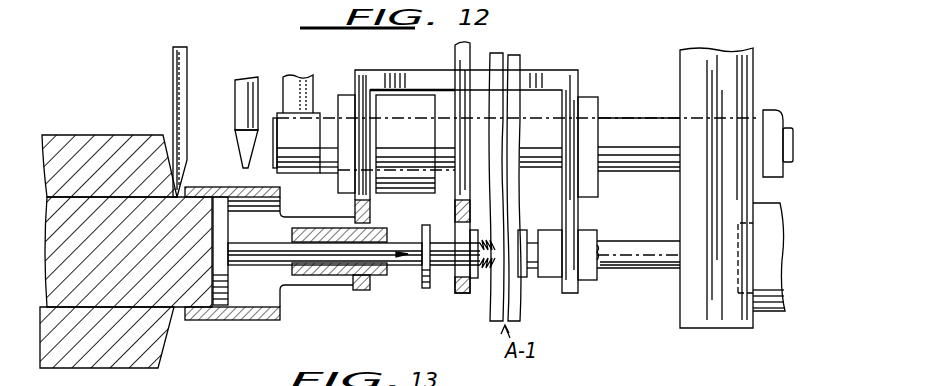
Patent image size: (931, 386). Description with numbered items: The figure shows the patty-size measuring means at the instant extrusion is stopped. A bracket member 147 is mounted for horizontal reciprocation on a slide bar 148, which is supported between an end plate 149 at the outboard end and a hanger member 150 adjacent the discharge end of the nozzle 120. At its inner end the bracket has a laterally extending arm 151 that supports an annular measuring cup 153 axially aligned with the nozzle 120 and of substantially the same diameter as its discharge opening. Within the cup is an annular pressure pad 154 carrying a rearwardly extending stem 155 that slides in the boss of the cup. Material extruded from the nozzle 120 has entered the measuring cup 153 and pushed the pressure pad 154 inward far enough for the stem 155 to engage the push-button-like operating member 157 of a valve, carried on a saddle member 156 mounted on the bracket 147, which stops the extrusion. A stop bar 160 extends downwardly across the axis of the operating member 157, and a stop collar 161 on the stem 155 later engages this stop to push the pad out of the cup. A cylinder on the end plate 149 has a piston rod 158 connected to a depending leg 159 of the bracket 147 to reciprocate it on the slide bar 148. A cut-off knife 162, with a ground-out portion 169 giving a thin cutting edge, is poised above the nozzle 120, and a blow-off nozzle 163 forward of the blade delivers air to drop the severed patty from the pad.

The nozzle 120 is at (85, 382).
The cut-off knife 162 is at (173, 82).
The ground-out portion 169 is at (181, 80).
The blow-off nozzle 163 is at (241, 103).
The hanger member 150 is at (305, 93).
The measuring cup 153 is at (246, 320).
The pressure pad 154 is at (224, 308).
The stem 155 is at (408, 256).
The bracket arm 151 is at (367, 213).
The stop collar 161 is at (427, 289).
The stop bar 160 is at (463, 190).
The operating member 157 is at (477, 286).
The saddle member 156 is at (515, 62).
The bracket member 147 is at (562, 77).
The depending leg 159 is at (568, 297).
The slide bar 148 is at (622, 128).
The piston rod 158 is at (638, 265).
The end plate 149 is at (748, 73).